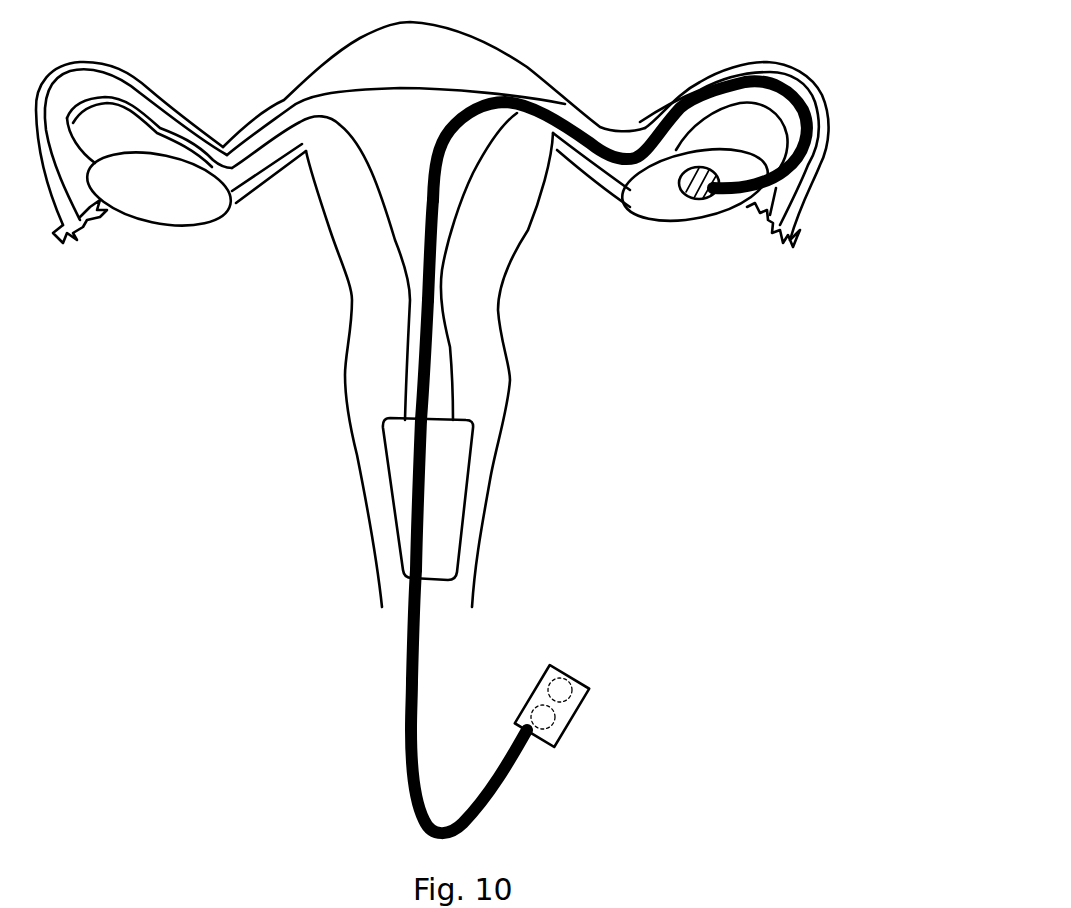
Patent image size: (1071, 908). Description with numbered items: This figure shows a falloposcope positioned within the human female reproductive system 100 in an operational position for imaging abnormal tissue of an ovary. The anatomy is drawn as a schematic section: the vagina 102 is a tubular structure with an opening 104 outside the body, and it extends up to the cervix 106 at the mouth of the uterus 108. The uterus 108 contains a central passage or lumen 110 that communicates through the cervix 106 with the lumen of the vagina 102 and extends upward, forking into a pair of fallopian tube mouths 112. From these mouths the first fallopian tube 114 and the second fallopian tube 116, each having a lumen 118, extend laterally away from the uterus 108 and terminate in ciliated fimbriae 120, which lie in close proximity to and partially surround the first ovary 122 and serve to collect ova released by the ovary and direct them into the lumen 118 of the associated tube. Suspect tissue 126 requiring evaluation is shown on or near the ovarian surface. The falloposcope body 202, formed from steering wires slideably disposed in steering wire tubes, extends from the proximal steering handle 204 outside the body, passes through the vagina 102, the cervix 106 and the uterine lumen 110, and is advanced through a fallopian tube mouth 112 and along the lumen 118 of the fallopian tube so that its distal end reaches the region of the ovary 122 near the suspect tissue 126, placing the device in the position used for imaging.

The human female reproductive system 100 is at (877, 89).
The vagina 102 is at (475, 505).
The opening 104 is at (422, 600).
The cervix 106 is at (475, 424).
The uterus 108 is at (434, 314).
The central passage or lumen 110 is at (428, 352).
The fallopian tube mouths 112 is at (513, 100).
The first fallopian tube 114 is at (127, 72).
The second fallopian tube 116 is at (808, 170).
The lumen 118 is at (812, 136).
The ciliated fimbriae 120 is at (85, 229).
The first ovary 122 is at (190, 223).
The suspect tissue 126 is at (703, 199).
The falloposcope body 202 is at (407, 733).
The steering handle 204 is at (562, 733).